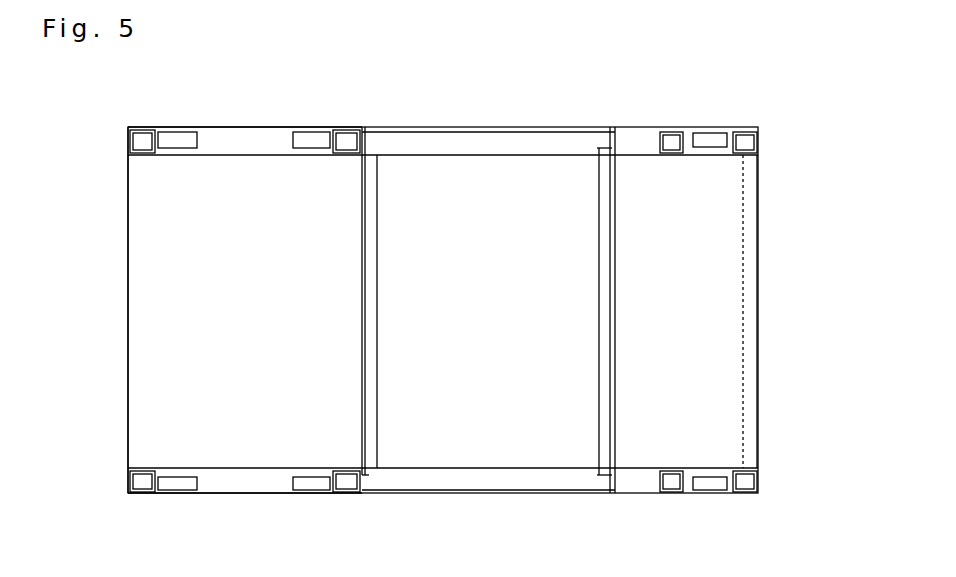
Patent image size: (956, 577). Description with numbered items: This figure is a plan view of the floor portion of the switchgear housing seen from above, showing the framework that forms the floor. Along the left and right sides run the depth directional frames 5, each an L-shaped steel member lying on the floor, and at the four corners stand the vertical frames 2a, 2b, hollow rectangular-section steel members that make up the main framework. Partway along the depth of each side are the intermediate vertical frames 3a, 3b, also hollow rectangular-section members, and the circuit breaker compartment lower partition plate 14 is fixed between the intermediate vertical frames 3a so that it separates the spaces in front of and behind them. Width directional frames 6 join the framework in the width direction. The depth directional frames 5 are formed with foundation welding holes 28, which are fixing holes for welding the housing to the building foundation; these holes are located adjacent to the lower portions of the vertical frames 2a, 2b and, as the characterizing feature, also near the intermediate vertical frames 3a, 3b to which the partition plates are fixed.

The vertical frame 2a is at (138, 127).
The vertical frame 2b is at (752, 128).
The intermediate vertical frame 3a is at (350, 128).
The intermediate vertical frame 3b is at (668, 128).
The depth directional frame 5 is at (260, 127).
The width directional frame 6 is at (760, 325).
The circuit breaker compartment lower partition plate 14 is at (362, 350).
The foundation welding hole 28 is at (175, 137).